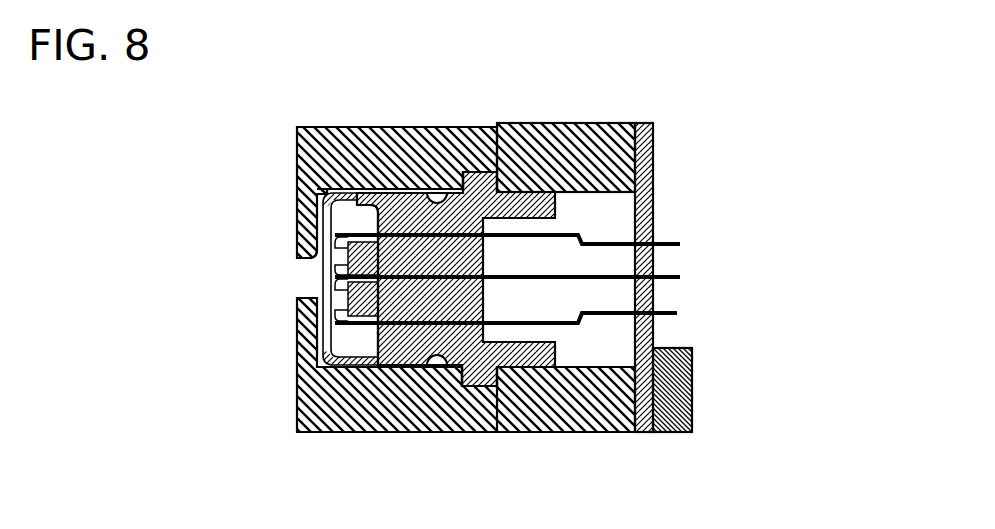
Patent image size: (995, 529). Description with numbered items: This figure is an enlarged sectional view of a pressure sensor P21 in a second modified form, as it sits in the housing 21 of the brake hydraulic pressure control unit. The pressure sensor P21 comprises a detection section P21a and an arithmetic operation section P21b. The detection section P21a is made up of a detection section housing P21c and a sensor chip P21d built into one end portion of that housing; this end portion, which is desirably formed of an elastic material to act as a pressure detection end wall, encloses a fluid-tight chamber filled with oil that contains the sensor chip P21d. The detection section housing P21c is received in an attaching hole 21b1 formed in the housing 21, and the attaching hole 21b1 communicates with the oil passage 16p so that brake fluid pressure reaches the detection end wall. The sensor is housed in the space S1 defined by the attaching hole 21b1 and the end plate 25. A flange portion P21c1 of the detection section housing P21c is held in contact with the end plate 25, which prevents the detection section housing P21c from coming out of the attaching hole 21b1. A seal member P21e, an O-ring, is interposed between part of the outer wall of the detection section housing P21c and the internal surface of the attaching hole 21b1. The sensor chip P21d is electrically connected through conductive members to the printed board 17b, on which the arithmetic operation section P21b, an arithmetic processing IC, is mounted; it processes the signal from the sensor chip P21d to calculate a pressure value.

The housing 21 is at (374, 412).
The attaching hole 21b1 is at (319, 183).
The oil passage 16p is at (312, 262).
The end plate 25 is at (590, 126).
The printed board 17b is at (645, 126).
The pressure sensor P21 is at (727, 302).
The detection section P21a is at (528, 80).
The arithmetic operation section P21b is at (692, 385).
The detection section housing P21c is at (461, 188).
The flange portion P21c1 is at (482, 388).
The sensor chip P21d is at (366, 192).
The seal member P21e is at (434, 368).
The space S1 is at (322, 358).